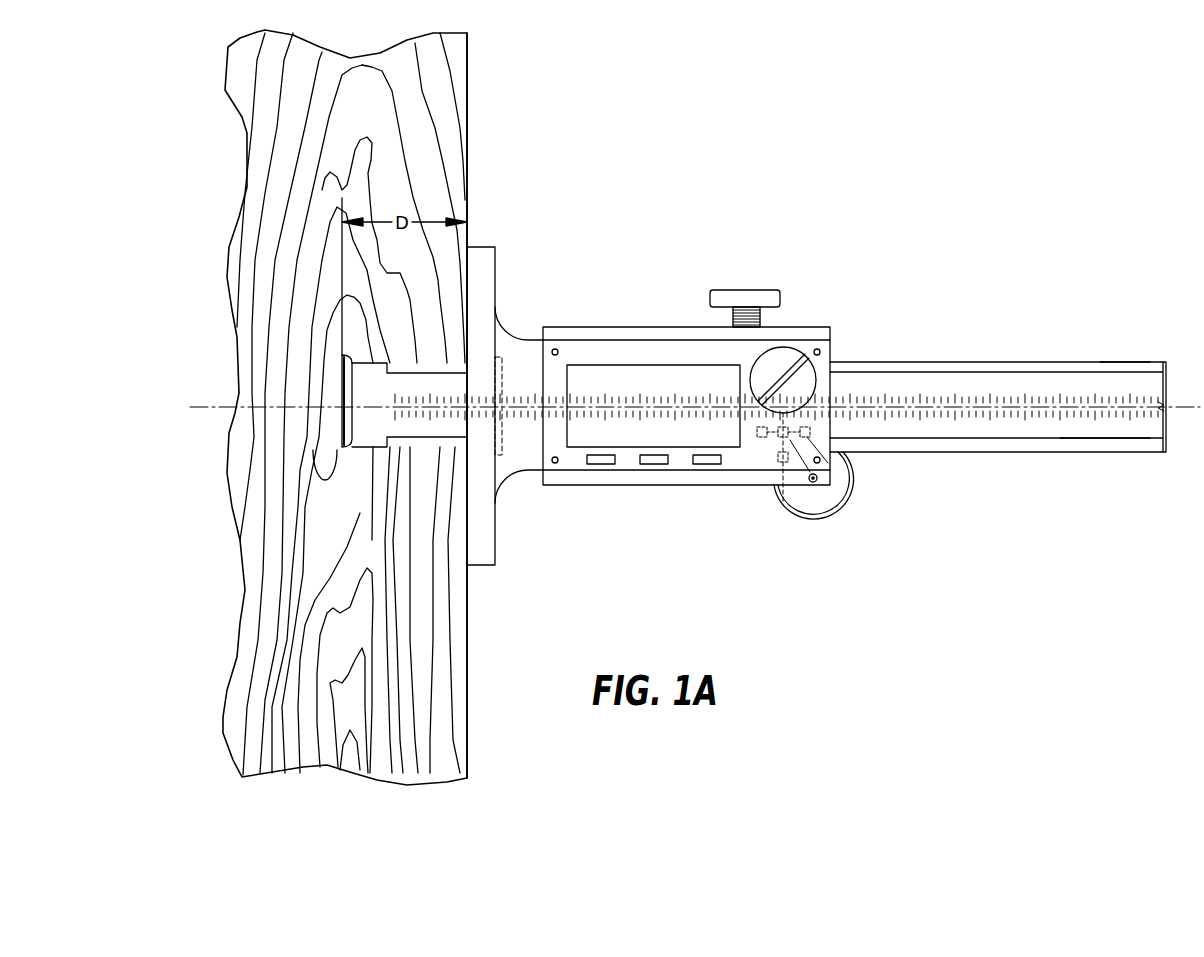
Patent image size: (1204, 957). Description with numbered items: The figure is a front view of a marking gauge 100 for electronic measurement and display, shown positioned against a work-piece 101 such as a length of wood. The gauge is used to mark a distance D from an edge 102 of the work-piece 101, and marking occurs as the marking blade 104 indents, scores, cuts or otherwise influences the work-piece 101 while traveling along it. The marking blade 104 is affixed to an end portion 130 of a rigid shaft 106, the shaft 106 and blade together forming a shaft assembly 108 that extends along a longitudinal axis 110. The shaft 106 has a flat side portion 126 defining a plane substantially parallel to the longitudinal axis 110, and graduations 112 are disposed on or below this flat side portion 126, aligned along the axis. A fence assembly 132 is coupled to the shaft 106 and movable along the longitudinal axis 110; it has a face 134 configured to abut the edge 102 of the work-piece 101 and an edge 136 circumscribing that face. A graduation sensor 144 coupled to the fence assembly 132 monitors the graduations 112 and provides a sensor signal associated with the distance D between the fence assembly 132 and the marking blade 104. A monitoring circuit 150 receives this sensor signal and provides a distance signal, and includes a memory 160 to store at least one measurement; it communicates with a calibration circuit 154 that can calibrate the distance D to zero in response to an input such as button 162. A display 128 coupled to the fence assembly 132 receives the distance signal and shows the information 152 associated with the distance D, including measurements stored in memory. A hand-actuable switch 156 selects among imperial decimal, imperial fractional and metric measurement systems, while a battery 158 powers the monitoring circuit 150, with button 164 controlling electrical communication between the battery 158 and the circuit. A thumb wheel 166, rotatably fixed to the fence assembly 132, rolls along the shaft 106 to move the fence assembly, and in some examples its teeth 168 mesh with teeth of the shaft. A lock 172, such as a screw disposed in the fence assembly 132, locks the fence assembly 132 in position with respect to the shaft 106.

The marking gauge 100 is at (1097, 80).
The work-piece 101 is at (467, 62).
The edge 102 is at (463, 550).
The marking blade 104 is at (286, 420).
The shaft 106 is at (1052, 362).
The shaft assembly 108 is at (1113, 356).
The longitudinal axis 110 is at (200, 409).
The graduations 112 is at (1082, 413).
The flat side portion 126 is at (1122, 432).
The display 128 is at (612, 365).
The end portion 130 is at (338, 393).
The fence assembly 132 is at (498, 568).
The face 134 is at (463, 507).
The edge 136 is at (520, 517).
The graduation sensor 144 is at (757, 432).
The monitoring circuit 150 is at (849, 498).
The information 152 is at (657, 367).
The calibration circuit 154 is at (853, 470).
The hand-actuable switch 156 is at (600, 466).
The battery 158 is at (788, 358).
The memory 160 is at (783, 503).
The button 162 is at (653, 466).
The button 164 is at (706, 466).
The thumb wheel 166 is at (813, 500).
The teeth 168 is at (835, 508).
The lock 172 is at (746, 292).